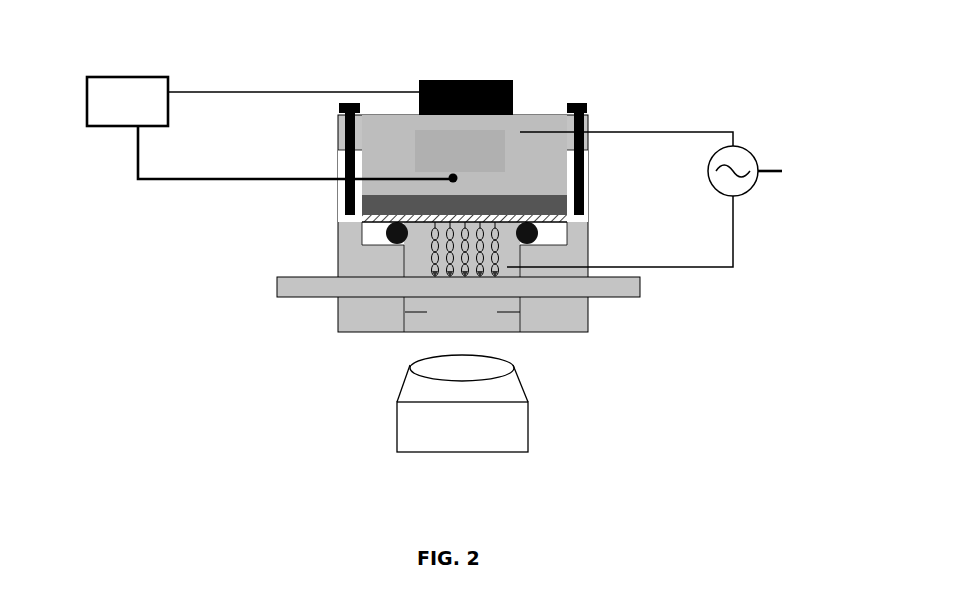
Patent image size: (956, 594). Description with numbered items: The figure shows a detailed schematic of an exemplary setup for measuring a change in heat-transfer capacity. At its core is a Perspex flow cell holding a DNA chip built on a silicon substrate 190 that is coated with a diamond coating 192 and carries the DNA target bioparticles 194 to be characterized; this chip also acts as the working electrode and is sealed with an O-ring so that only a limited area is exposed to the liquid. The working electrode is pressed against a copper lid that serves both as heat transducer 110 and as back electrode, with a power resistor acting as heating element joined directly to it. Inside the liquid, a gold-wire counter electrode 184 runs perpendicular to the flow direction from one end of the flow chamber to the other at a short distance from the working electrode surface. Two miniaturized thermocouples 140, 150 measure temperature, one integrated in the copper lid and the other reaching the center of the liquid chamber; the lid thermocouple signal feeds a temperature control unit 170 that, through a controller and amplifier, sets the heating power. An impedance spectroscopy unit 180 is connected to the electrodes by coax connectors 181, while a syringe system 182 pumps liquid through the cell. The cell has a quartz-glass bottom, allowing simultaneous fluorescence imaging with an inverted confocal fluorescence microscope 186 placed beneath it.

The heat transducer 110 is at (465, 80).
The thermocouple 140 is at (298, 154).
The thermocouple 150 is at (350, 230).
The temperature control unit 170 is at (113, 93).
The impedance spectroscopy unit 180 is at (773, 171).
The coax connectors 181 is at (626, 120).
The syringe system 182 is at (262, 285).
The counter electrode 184 is at (620, 231).
The inverted confocal fluorescence microscope 186 is at (435, 322).
The silicon substrate 190 is at (383, 207).
The diamond coating 192 is at (575, 218).
The DNA target bioparticles 194 is at (503, 296).